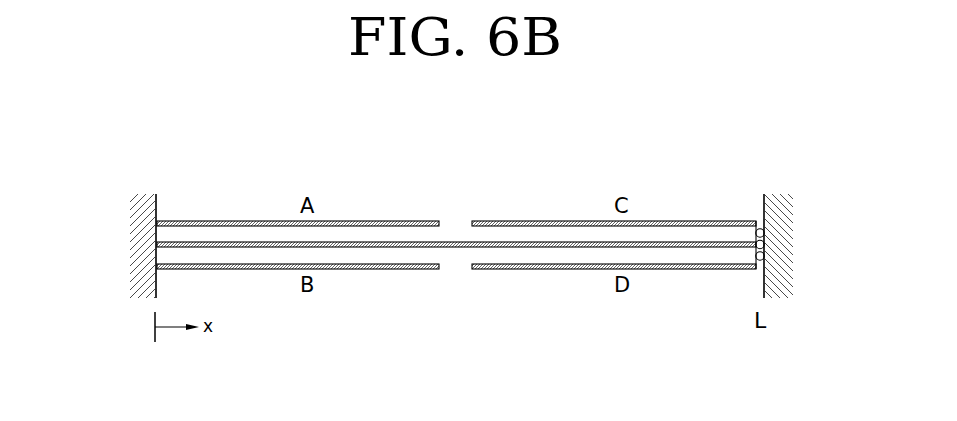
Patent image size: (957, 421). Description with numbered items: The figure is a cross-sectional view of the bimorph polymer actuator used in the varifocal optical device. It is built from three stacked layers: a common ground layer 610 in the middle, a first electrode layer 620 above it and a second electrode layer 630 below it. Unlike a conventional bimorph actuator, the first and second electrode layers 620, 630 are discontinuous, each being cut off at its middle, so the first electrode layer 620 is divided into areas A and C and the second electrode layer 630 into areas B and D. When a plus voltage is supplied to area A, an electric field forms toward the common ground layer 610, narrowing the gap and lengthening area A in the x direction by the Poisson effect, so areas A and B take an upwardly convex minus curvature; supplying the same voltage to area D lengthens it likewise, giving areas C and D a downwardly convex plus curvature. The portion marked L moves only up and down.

The common ground layer 610 is at (687, 242).
The first electrode layer 620 is at (611, 202).
The second electrode layer 630 is at (607, 295).